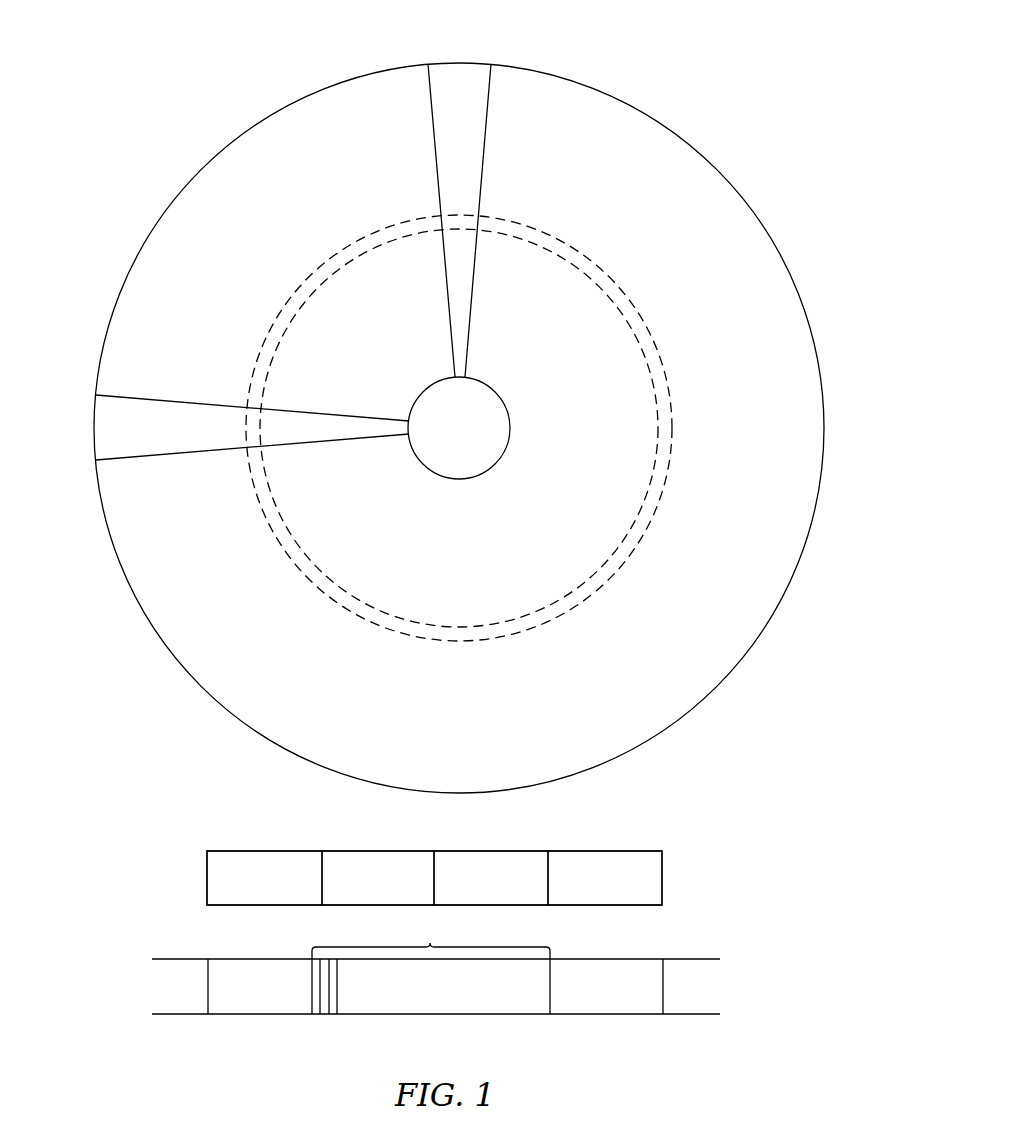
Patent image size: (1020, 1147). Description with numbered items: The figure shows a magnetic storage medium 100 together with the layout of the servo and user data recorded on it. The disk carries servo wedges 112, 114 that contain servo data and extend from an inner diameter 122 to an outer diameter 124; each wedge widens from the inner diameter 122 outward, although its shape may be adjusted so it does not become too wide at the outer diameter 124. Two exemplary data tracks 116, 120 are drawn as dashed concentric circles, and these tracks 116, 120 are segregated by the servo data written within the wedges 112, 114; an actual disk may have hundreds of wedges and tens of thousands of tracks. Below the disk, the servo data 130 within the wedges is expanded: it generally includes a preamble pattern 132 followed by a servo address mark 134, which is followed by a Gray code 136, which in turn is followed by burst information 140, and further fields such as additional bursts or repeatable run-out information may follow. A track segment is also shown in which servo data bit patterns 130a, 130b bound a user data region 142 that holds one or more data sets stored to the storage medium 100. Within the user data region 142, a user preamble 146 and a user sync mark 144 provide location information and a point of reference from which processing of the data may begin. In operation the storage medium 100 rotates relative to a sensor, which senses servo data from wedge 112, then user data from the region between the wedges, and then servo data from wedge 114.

The magnetic storage medium 100 is at (729, 58).
The servo wedge 112 is at (95, 410).
The servo wedge 114 is at (487, 63).
The data track 116 is at (526, 224).
The data track 120 is at (565, 260).
The inner diameter 122 is at (510, 430).
The outer diameter 124 is at (697, 149).
The servo data 130 is at (699, 818).
The preamble pattern 132 is at (264, 878).
The servo address mark 134 is at (378, 878).
The Gray code 136 is at (491, 878).
The burst information 140 is at (605, 878).
The servo data bit pattern 130a is at (260, 986).
The servo data bit pattern 130b is at (606, 986).
The user data region 142 is at (512, 930).
The user sync mark 144 is at (498, 1059).
The user preamble 146 is at (325, 1024).